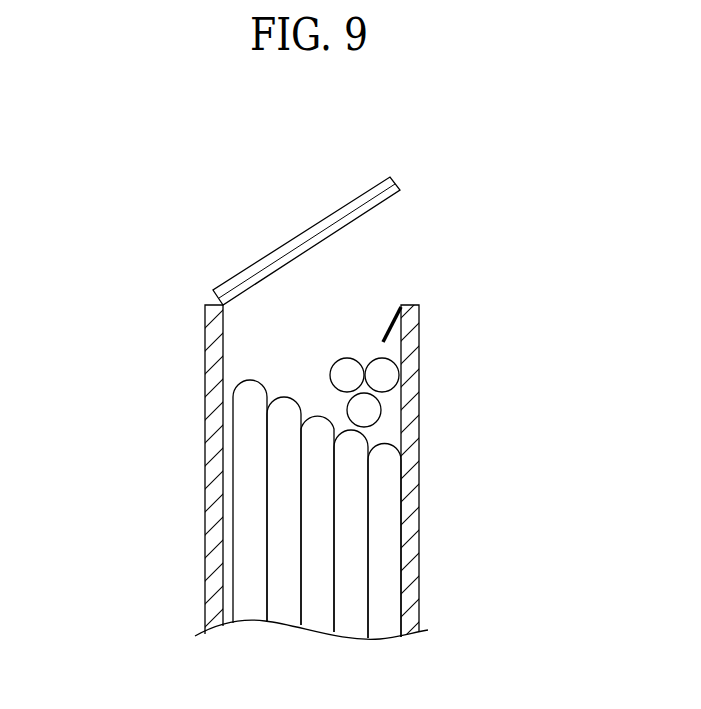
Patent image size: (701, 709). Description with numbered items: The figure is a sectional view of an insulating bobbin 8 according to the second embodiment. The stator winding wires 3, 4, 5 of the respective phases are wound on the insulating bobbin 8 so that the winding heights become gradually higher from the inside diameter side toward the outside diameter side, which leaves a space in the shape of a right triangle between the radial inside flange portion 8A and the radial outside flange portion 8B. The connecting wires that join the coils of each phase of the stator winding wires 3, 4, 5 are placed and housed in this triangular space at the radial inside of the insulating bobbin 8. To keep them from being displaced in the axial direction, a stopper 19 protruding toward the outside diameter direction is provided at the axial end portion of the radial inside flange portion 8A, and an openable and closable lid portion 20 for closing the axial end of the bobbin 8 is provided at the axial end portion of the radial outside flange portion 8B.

The stator winding wire 3 is at (221, 509).
The stator winding wire 4 is at (334, 527).
The stator winding wire 5 is at (384, 541).
The insulating bobbin 8 is at (318, 475).
The radial inside flange portion 8A is at (412, 447).
The radial outside flange portion 8B is at (206, 393).
The stopper 19 is at (388, 327).
The lid portion 20 is at (313, 228).